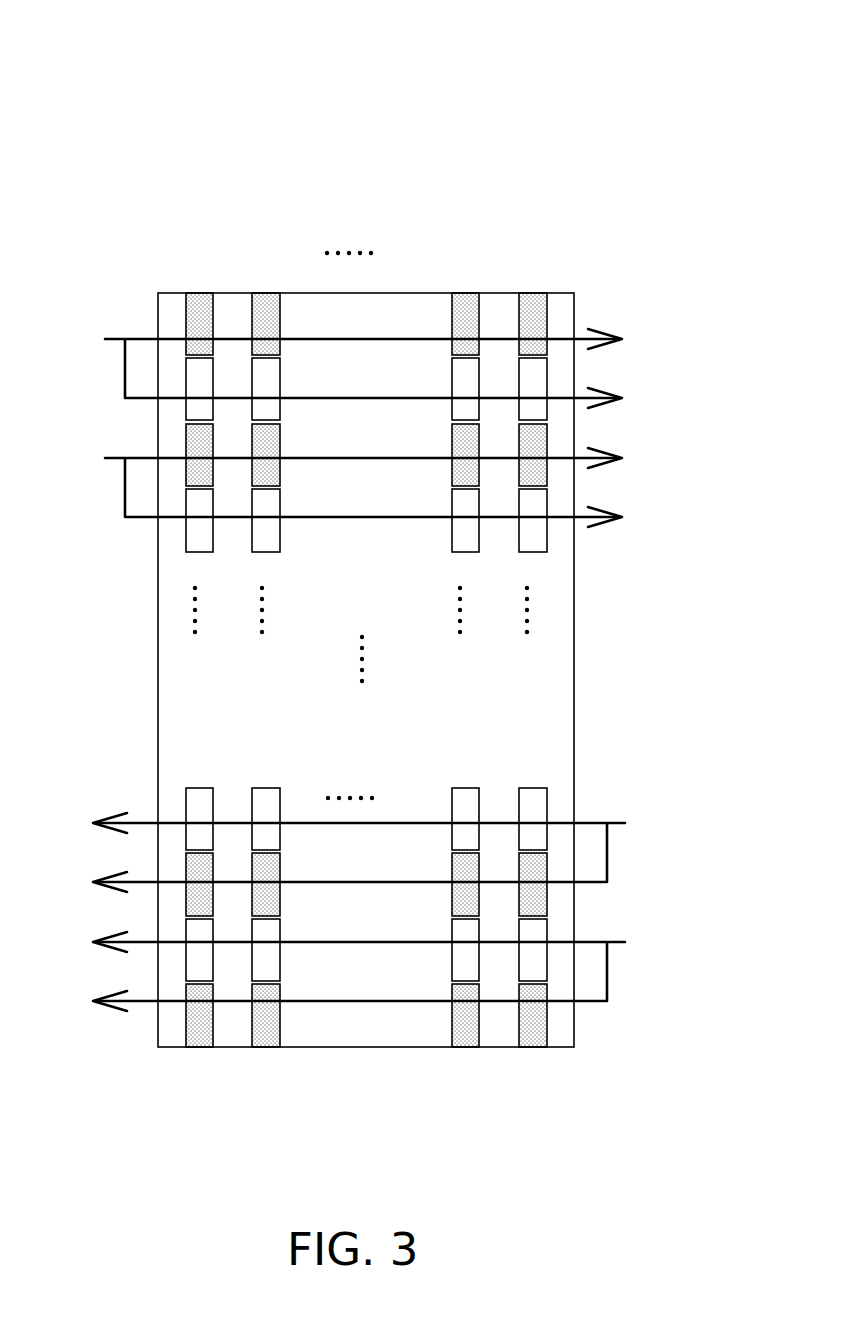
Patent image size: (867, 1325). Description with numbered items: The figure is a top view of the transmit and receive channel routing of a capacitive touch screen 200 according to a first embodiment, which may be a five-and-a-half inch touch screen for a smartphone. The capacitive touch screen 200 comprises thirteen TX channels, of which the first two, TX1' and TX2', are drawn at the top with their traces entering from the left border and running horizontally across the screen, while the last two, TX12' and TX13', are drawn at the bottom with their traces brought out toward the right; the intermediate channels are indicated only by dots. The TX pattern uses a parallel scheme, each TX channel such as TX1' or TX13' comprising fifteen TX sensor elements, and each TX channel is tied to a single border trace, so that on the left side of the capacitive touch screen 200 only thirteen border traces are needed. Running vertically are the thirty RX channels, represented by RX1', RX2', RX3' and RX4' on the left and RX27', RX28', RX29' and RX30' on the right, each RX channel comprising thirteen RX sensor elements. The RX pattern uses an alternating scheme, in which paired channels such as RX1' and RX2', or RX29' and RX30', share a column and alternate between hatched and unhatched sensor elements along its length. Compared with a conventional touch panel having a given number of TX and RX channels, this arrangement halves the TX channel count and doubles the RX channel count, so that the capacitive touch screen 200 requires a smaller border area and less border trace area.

The capacitive touch screen 200 is at (374, 523).
The TX channel TX1' is at (324, 365).
The TX channel TX2' is at (324, 484).
The TX channel TX12' is at (403, 851).
The TX channel TX13' is at (403, 970).
The RX channel RX1' is at (191, 634).
The RX channel RX2' is at (191, 618).
The RX channel RX3' is at (281, 634).
The RX channel RX4' is at (281, 618).
The RX channel RX27' is at (457, 634).
The RX channel RX28' is at (457, 618).
The RX channel RX29' is at (545, 634).
The RX channel RX30' is at (545, 618).